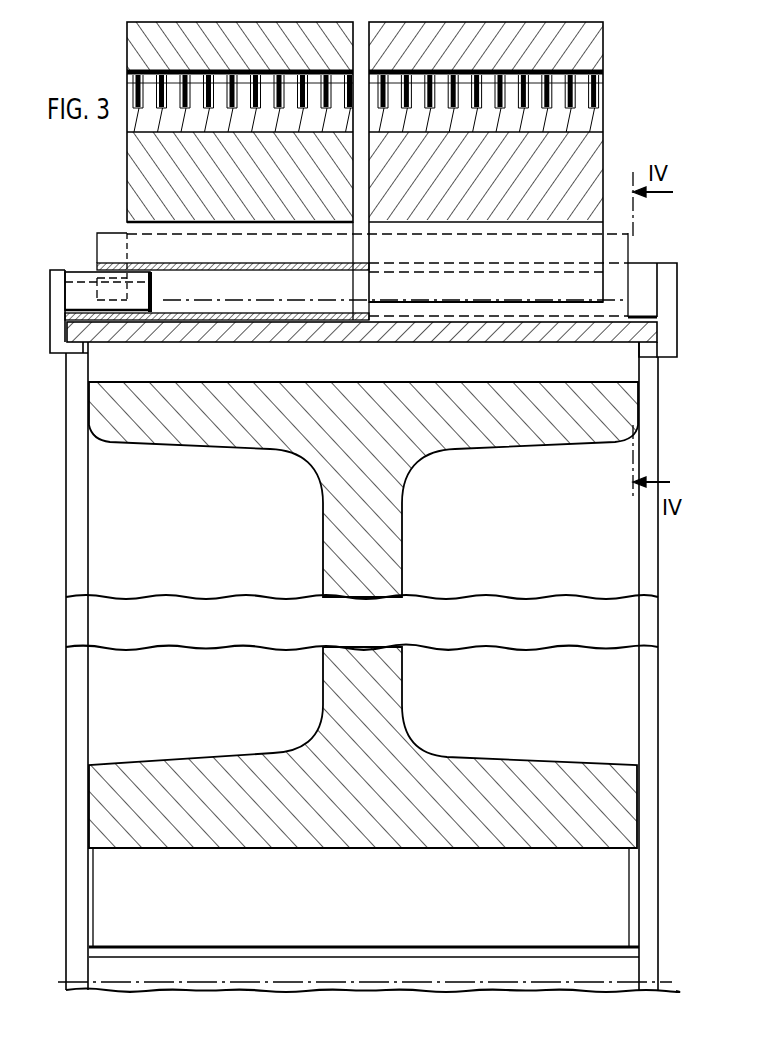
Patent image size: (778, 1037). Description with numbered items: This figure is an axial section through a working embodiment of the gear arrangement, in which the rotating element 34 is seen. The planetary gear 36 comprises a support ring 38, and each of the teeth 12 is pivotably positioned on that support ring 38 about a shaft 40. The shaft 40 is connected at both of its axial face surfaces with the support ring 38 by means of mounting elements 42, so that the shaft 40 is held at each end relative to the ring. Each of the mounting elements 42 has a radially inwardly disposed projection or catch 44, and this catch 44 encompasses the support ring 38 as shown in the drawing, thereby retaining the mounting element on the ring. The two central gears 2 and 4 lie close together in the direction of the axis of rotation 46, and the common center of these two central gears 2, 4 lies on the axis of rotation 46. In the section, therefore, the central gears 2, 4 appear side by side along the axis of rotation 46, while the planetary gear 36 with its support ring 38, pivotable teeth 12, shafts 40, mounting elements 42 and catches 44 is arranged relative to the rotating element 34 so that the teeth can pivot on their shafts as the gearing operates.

The central gear 2 is at (127, 42).
The central gear 4 is at (593, 57).
The tooth 12 is at (108, 243).
The rotating element 34 is at (390, 531).
The planetary gear 36 is at (116, 214).
The support ring 38 is at (200, 332).
The shaft 40 is at (88, 275).
The mounting element 42 is at (60, 282).
The catch 44 is at (648, 348).
The axis of rotation 46 is at (231, 976).